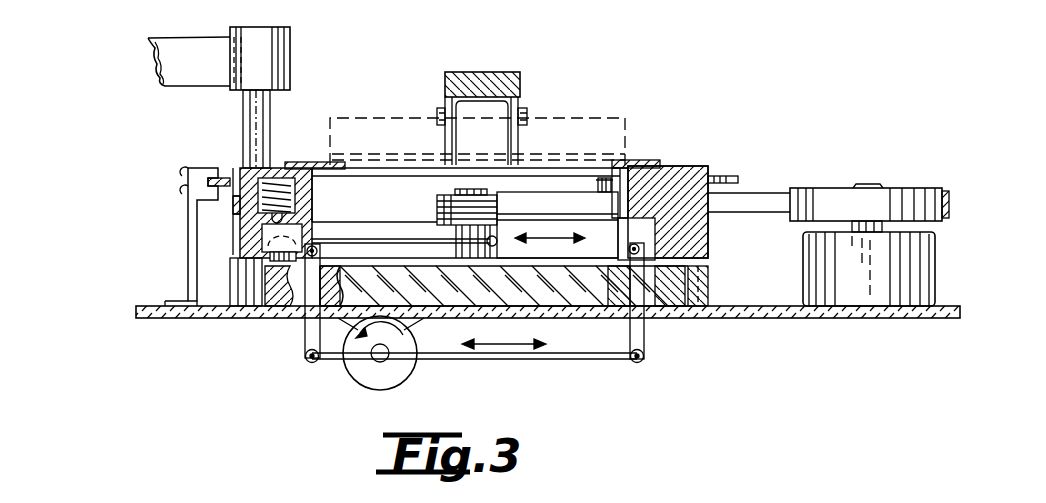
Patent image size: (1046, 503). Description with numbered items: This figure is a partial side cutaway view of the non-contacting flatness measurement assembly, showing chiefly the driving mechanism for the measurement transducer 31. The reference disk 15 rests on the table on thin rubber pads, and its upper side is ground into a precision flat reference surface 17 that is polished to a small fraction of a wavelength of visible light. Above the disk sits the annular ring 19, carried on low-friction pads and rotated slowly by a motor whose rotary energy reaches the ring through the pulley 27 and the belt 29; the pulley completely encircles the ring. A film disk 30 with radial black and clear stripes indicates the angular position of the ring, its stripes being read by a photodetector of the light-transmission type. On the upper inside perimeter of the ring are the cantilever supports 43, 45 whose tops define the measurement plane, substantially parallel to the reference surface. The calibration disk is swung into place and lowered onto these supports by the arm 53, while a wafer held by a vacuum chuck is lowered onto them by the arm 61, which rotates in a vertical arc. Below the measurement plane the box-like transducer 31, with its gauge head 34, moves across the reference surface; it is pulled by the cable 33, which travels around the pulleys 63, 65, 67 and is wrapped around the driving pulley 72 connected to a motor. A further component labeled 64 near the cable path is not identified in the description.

The reference disk 15 is at (705, 280).
The reference surface 17 is at (352, 266).
The annular ring 19 is at (705, 225).
The pulley 27 is at (858, 188).
The belt 29 is at (768, 193).
The film disk 30 is at (722, 177).
The measurement transducer 31 is at (504, 196).
The cable 33 is at (445, 239).
The gauge head 34 is at (203, 168).
The cantilever support 43 is at (648, 162).
The cantilever support 45 is at (318, 162).
The arm 53 is at (205, 48).
The arm 61 is at (488, 72).
The pulley 63 is at (320, 251).
The pivot pin 64 is at (628, 249).
The pulley 65 is at (304, 358).
The pulley 67 is at (642, 361).
The driving pulley 72 is at (400, 366).